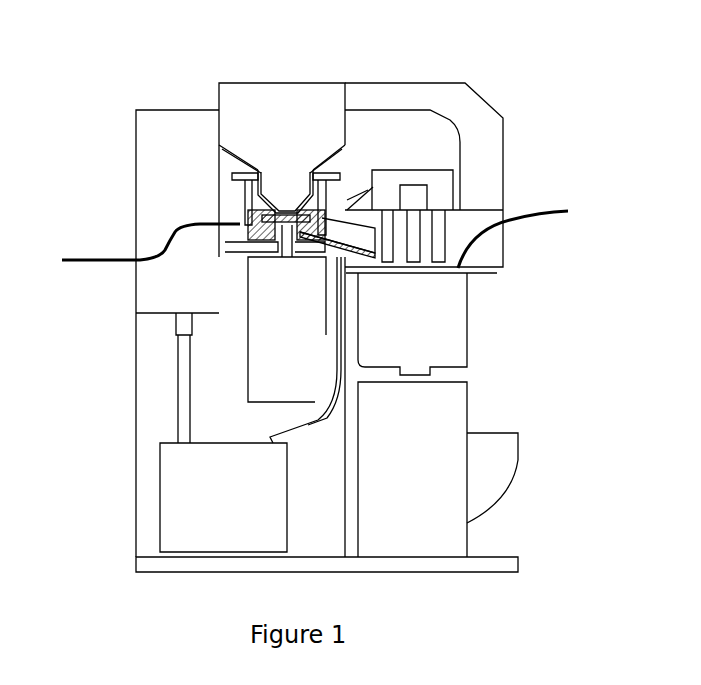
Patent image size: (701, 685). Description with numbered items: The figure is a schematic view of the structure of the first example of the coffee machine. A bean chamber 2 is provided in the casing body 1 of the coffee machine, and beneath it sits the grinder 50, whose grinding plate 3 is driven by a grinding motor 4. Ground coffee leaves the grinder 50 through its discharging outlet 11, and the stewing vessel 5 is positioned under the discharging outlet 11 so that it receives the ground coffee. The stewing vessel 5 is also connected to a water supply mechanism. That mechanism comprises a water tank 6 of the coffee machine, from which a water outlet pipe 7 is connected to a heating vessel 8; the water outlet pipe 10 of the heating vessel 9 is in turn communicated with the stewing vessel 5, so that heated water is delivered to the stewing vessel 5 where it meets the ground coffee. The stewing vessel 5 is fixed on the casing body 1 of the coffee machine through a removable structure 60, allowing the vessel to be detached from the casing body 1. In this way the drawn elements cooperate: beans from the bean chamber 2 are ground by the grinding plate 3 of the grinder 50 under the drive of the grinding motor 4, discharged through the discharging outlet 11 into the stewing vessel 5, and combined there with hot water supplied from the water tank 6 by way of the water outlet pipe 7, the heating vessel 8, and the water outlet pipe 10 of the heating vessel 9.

The casing body 1 is at (470, 112).
The bean chamber 2 is at (298, 108).
The grinding plate 3 is at (250, 215).
The grinding motor 4 is at (270, 358).
The stewing vessel 5 is at (435, 315).
The water tank 6 is at (168, 143).
The water outlet pipe 7 is at (175, 405).
The heating vessel 8 is at (195, 490).
The heating vessel 9 is at (248, 535).
The water outlet pipe 10 is at (290, 433).
The discharging outlet 11 is at (352, 242).
The grinder 50 is at (135, 248).
The removable structure 60 is at (530, 233).